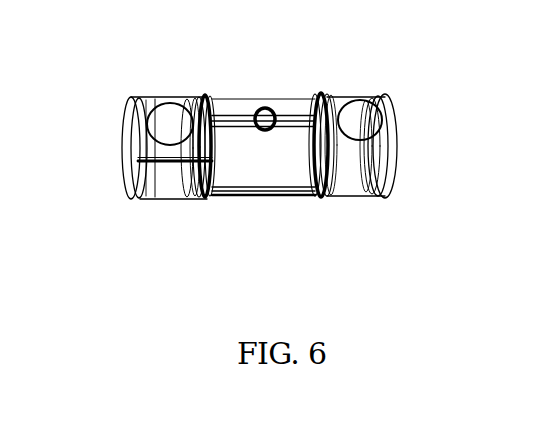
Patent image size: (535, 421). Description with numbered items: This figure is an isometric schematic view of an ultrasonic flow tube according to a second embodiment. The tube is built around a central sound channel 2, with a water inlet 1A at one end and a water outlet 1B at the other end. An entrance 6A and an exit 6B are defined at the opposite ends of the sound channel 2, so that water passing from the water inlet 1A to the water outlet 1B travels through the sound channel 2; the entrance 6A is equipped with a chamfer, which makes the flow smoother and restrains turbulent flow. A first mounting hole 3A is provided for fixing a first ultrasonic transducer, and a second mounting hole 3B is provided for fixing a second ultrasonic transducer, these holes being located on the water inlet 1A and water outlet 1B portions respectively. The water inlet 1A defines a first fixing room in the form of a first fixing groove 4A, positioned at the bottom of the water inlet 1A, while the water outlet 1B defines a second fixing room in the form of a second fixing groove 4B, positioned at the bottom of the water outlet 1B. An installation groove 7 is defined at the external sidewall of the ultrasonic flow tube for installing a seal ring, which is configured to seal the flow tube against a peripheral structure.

The water inlet 1A is at (120, 124).
The water outlet 1B is at (398, 132).
The sound channel 2 is at (258, 180).
The first mounting hole 3A is at (155, 95).
The second mounting hole 3B is at (355, 110).
The first fixing groove 4A is at (155, 195).
The second fixing groove 4B is at (358, 195).
The entrance 6A is at (193, 195).
The exit 6B is at (335, 180).
The installation groove 7 is at (318, 93).